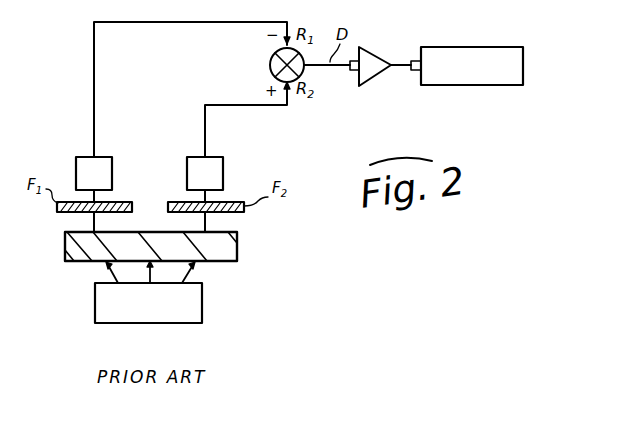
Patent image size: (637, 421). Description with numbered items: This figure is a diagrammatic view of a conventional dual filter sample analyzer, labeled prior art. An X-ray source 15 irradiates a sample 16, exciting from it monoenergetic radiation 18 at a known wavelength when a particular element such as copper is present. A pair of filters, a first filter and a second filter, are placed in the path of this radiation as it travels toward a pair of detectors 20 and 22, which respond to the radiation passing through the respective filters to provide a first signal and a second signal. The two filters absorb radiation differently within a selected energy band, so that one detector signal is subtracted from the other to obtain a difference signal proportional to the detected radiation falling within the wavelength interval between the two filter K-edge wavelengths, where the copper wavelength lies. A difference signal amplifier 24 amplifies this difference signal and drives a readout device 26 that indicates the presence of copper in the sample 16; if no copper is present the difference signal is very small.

The X-ray source 15 is at (202, 298).
The sample 16 is at (237, 247).
The monoenergetic radiation 18 is at (210, 228).
The detector 20 is at (76, 163).
The detector 22 is at (223, 172).
The difference signal amplifier 24 is at (365, 86).
The readout device 26 is at (470, 85).